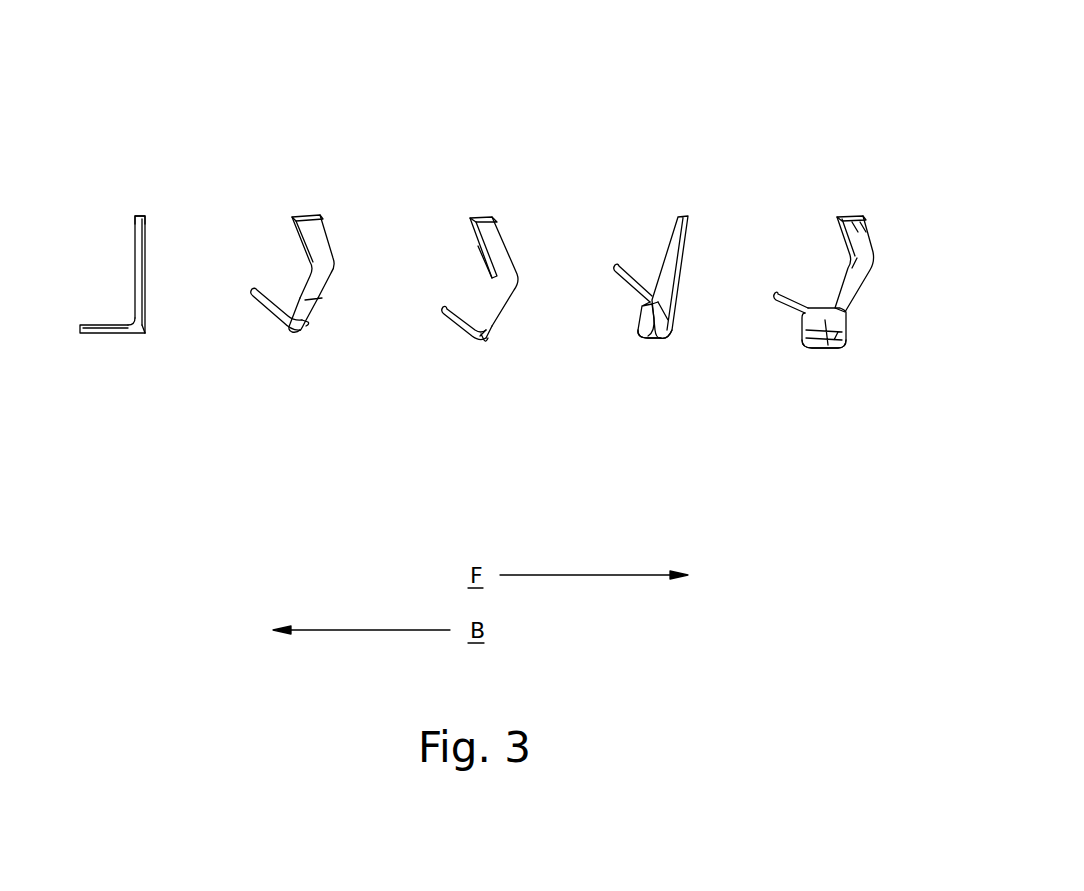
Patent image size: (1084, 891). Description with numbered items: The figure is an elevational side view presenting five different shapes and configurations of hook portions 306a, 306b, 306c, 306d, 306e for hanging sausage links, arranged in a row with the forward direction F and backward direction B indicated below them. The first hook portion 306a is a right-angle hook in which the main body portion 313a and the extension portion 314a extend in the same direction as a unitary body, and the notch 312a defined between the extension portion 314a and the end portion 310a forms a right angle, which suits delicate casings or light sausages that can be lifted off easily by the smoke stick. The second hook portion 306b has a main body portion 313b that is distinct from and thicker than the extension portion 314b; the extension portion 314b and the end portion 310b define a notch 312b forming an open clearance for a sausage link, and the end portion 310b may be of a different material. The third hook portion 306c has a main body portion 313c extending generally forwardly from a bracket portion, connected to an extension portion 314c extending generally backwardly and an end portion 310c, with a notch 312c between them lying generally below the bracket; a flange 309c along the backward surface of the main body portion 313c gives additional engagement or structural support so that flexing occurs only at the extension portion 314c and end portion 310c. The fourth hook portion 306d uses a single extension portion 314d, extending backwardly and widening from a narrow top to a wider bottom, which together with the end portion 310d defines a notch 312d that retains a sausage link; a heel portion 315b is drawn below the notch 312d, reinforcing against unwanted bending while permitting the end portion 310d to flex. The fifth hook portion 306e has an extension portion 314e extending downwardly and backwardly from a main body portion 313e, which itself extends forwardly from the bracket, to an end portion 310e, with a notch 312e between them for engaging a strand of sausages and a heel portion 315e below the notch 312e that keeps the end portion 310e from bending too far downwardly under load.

The hook portion 306a is at (124, 178).
The hook portion 306b is at (301, 178).
The hook portion 306c is at (478, 178).
The hook portion 306d is at (661, 178).
The hook portion 306e is at (831, 178).
The flange 309c is at (478, 250).
The end portion 310a is at (89, 336).
The end portion 310b is at (274, 334).
The end portion 310c is at (457, 326).
The end portion 310d is at (625, 305).
The end portion 310e is at (794, 310).
The notch 312a is at (133, 336).
The notch 312b is at (306, 336).
The notch 312c is at (485, 344).
The notch 312d is at (648, 342).
The notch 312e is at (828, 348).
The main body portion 313a is at (146, 222).
The main body portion 313b is at (328, 224).
The main body portion 313c is at (500, 224).
The main body portion 313e is at (848, 224).
The extension portion 314a is at (146, 280).
The extension portion 314b is at (328, 280).
The extension portion 314c is at (500, 294).
The extension portion 314d is at (688, 290).
The extension portion 314e is at (860, 296).
The hook portion 315b is at (662, 340).
The heel portion 315e is at (838, 344).